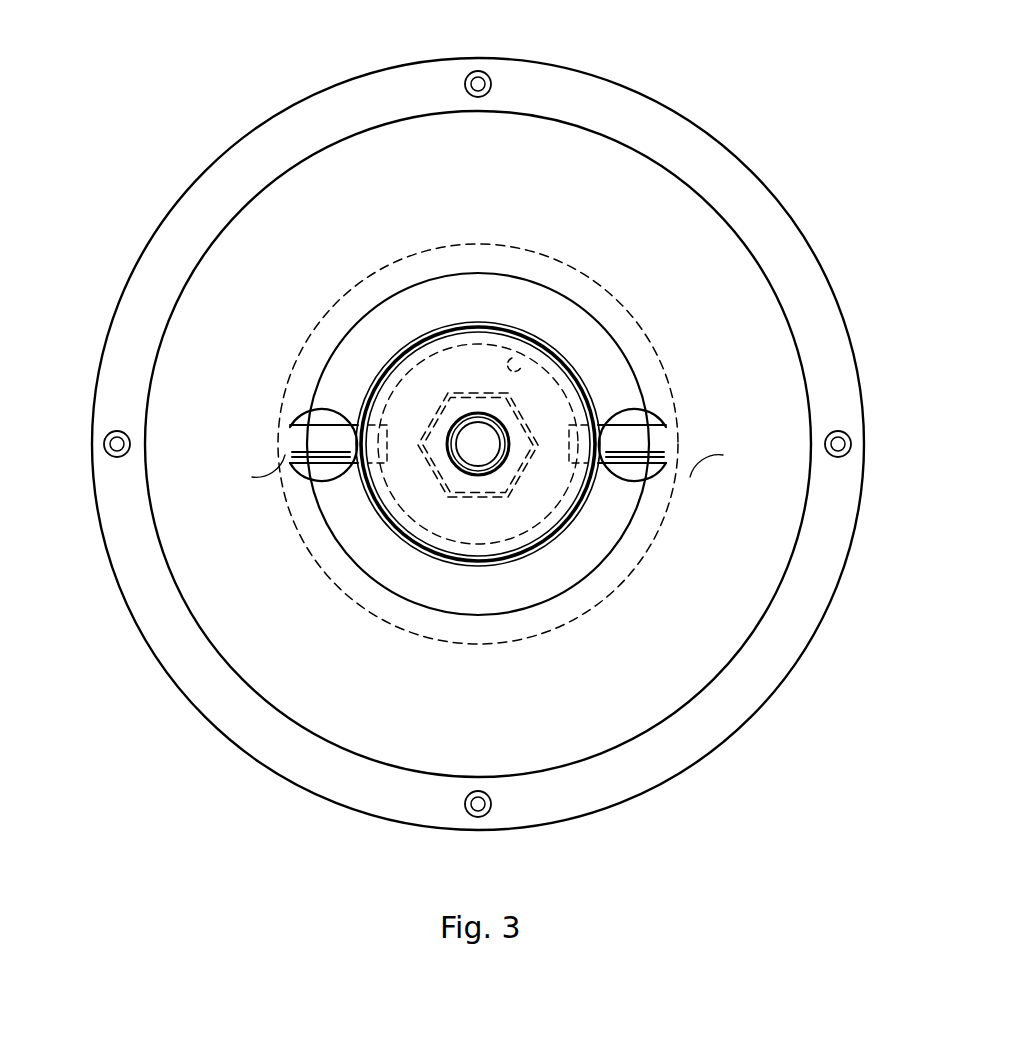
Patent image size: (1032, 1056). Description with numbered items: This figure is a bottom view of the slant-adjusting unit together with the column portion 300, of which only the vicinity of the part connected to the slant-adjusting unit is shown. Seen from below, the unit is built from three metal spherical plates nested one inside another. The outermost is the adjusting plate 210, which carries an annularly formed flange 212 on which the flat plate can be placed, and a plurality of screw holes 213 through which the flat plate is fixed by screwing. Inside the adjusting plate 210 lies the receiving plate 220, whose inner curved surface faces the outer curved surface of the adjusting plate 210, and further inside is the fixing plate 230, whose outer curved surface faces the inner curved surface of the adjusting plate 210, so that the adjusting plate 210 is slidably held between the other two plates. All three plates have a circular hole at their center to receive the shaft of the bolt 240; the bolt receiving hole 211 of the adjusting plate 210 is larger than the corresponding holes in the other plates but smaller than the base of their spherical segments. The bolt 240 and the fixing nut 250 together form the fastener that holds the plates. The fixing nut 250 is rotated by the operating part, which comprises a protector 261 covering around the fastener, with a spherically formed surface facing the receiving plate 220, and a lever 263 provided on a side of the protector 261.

The adjusting plate 210 is at (690, 225).
The bolt receiving hole 211 is at (517, 360).
The flange 212 is at (690, 142).
The screw holes 213 is at (478, 84).
The receiving plate 220 is at (618, 385).
The fixing plate 230 is at (402, 270).
The bolt 240 is at (488, 452).
The fixing nut 250 is at (485, 483).
The protector 261 is at (593, 492).
The lever 263 is at (246, 453).
The column portion 300 is at (577, 517).